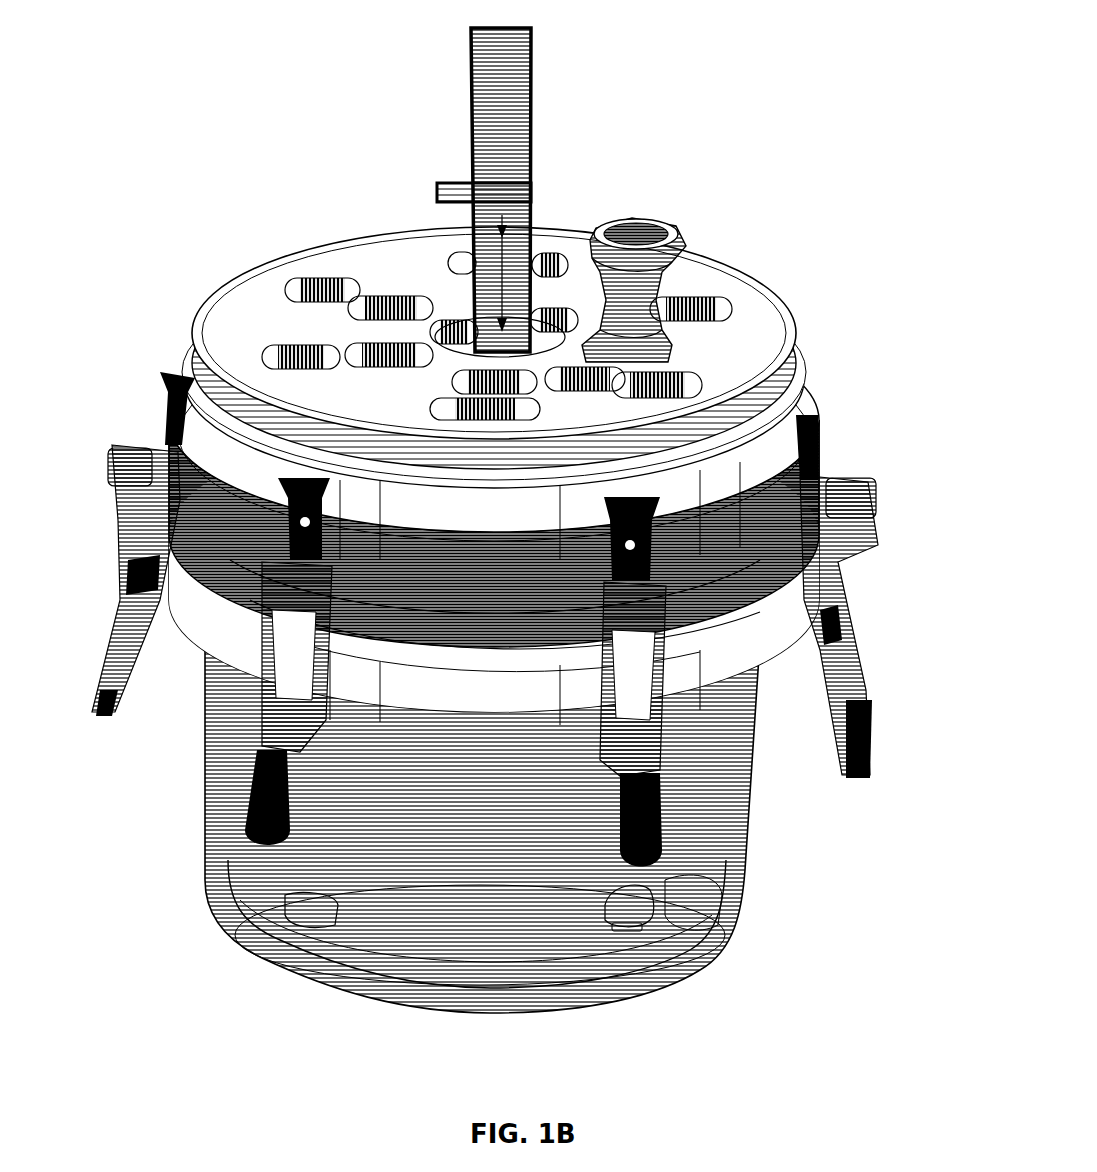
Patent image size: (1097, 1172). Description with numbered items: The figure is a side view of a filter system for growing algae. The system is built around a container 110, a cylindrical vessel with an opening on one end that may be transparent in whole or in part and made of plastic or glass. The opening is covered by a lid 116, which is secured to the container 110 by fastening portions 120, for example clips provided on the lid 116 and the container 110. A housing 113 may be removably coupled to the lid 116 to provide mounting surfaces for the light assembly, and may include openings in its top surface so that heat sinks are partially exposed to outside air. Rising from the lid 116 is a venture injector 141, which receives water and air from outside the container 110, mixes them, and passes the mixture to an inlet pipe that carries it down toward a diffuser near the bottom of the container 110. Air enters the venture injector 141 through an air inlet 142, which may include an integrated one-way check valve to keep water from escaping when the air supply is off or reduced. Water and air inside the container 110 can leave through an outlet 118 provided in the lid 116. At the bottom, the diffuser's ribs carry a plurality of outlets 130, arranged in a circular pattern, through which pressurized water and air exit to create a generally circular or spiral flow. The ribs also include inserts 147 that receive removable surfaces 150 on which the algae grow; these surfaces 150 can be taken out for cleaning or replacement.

The container 110 is at (208, 800).
The housing 113 is at (770, 312).
The lid 116 is at (178, 415).
The outlet 118 is at (676, 245).
The fastening portion 120 is at (878, 470).
The outlet 130 is at (623, 930).
The venture injector 141 is at (528, 62).
The air inlet 142 is at (440, 185).
The insert 147 is at (300, 923).
The surface 150 is at (436, 900).